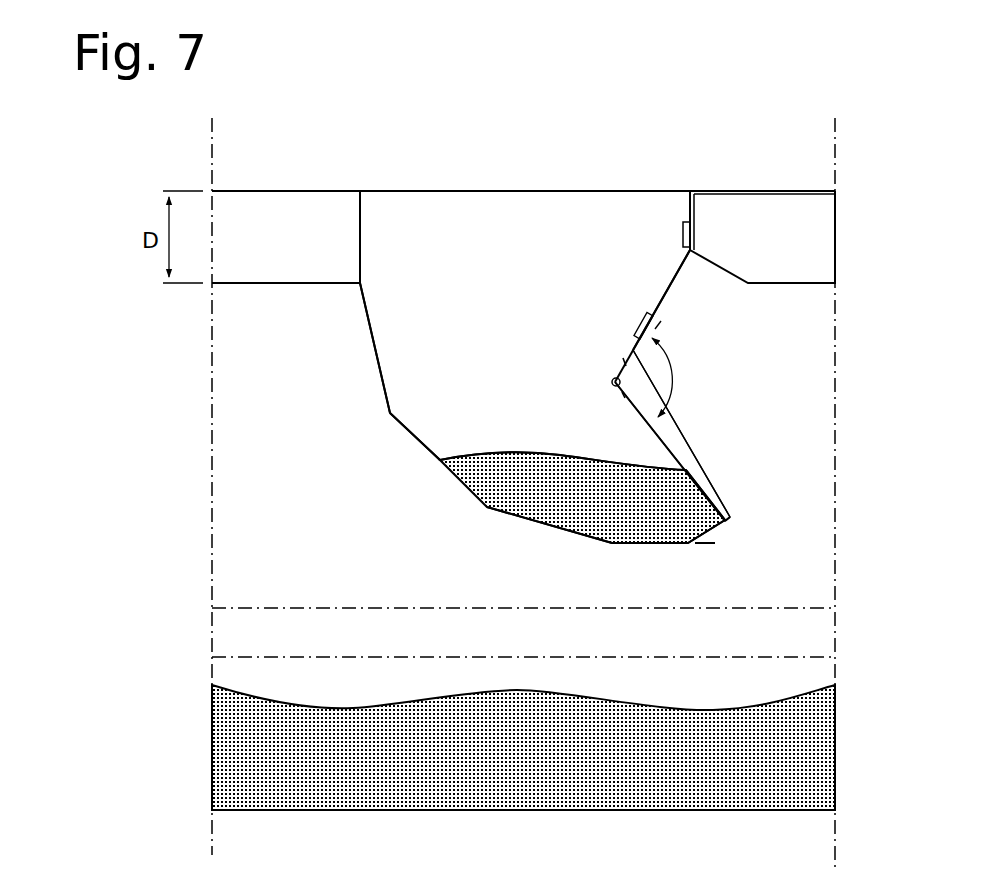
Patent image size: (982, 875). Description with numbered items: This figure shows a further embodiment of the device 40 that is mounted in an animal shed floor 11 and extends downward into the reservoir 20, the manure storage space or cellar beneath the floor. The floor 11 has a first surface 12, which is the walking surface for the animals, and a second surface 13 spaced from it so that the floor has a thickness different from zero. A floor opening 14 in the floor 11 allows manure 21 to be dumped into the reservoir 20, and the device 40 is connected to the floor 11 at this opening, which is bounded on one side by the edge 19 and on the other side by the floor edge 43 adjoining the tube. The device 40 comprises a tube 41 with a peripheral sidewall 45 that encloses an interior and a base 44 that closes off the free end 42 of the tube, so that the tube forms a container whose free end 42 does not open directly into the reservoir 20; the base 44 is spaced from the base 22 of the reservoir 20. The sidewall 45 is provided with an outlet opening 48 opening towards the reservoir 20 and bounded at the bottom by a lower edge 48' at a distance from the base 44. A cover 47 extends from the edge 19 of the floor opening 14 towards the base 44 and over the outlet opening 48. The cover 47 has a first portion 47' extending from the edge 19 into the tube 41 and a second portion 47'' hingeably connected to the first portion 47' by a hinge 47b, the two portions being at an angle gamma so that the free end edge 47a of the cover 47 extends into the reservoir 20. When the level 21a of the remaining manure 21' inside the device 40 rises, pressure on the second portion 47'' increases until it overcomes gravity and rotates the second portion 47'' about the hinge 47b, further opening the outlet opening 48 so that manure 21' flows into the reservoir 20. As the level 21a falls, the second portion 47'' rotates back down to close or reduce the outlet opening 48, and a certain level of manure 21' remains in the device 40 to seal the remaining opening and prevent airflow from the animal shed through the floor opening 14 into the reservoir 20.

The animal shed floor 11 is at (262, 208).
The first surface 12 is at (318, 191).
The second surface 13 is at (275, 283).
The floor opening 14 is at (520, 220).
The edge of the floor opening 19 is at (360, 190).
The reservoir 20 is at (312, 565).
The manure 21 is at (523, 747).
The remaining manure 21' is at (582, 497).
The manure level 21a is at (525, 460).
The base of the reservoir 22 is at (573, 810).
The device 40 is at (304, 402).
The tube 41 is at (367, 313).
The free end 42 is at (630, 543).
The tool side face 43 is at (360, 243).
The base 44 is at (667, 522).
The peripheral sidewall 45 is at (437, 458).
The cover 47 is at (633, 385).
The first portion 47' is at (654, 282).
The second portion 47'' is at (685, 433).
The end edge of the cover 47a is at (730, 527).
The hinge 47b is at (612, 382).
The outlet opening 48 is at (767, 593).
The lower edge 48' is at (726, 600).